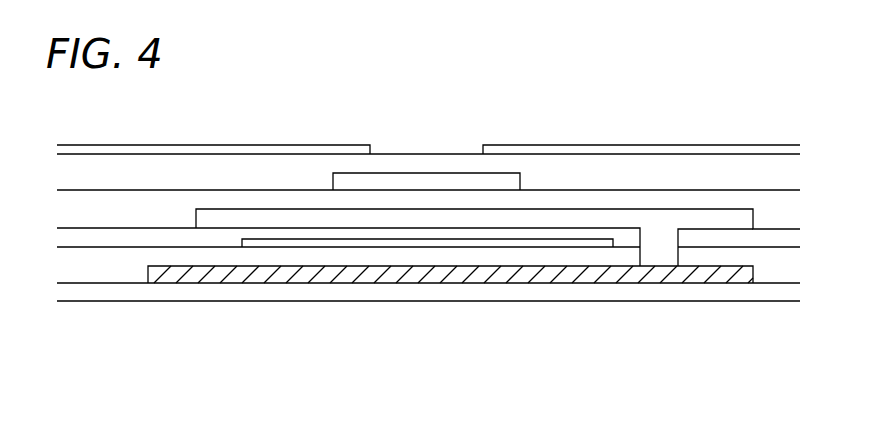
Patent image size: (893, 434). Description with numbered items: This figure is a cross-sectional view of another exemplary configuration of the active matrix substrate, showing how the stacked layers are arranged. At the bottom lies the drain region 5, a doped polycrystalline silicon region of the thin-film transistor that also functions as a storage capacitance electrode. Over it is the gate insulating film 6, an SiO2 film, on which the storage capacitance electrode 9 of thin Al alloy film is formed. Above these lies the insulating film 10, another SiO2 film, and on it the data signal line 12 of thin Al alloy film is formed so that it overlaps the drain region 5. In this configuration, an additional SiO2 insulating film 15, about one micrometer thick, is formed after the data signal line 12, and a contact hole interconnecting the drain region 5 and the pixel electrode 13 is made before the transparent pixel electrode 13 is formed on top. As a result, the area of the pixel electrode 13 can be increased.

The pixel electrode 13 is at (153, 150).
The insulating film 15 is at (660, 178).
The data signal line 12 is at (429, 183).
The insulating film 10 is at (177, 207).
The storage capacitance electrode 9 is at (218, 221).
The gate insulating film 6 is at (120, 241).
The drain region 5 is at (590, 250).